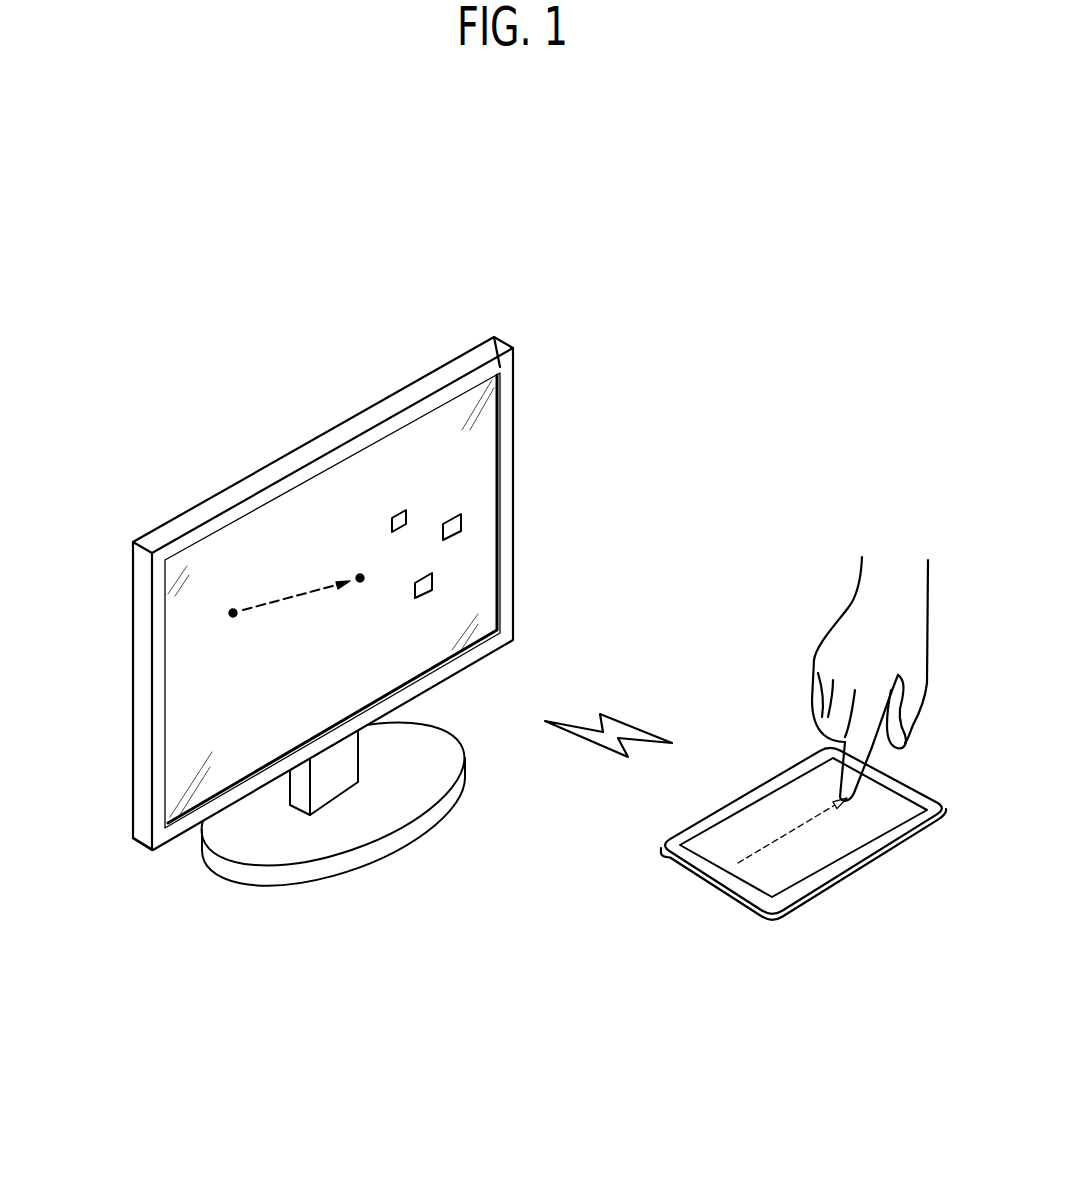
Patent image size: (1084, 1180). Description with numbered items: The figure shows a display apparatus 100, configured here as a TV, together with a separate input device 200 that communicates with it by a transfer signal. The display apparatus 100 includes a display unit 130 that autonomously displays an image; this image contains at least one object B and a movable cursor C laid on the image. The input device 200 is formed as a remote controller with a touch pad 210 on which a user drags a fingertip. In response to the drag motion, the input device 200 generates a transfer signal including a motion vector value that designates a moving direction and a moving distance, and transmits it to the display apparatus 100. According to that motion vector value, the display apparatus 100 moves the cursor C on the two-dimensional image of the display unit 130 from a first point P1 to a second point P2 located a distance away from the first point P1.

The display apparatus 100 is at (552, 356).
The display unit 130 is at (299, 518).
The first point P1 is at (233, 613).
The second point P2 is at (360, 578).
The cursor C is at (232, 616).
The object B is at (432, 578).
The input device 200 is at (793, 925).
The touch pad 210 is at (852, 825).